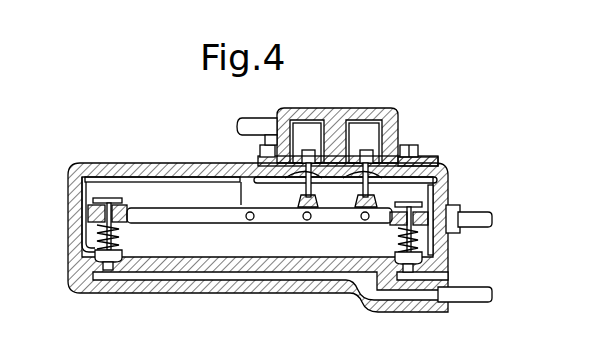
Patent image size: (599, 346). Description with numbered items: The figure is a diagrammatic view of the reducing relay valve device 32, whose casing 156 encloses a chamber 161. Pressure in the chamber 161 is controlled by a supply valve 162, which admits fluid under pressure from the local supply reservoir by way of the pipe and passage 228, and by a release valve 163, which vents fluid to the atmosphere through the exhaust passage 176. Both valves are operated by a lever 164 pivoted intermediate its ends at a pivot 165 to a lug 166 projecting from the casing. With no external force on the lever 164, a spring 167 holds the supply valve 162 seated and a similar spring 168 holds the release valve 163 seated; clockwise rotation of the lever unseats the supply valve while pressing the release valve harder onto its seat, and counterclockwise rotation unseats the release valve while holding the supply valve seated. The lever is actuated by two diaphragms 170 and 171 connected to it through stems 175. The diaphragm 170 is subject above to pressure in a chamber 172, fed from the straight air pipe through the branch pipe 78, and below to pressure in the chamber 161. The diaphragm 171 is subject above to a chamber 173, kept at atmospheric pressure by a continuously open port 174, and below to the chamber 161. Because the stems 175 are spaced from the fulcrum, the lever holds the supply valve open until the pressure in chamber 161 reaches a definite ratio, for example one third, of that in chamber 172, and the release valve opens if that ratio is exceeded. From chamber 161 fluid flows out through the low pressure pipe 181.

The housing 156 is at (224, 241).
The reducing relay valve device 32 is at (333, 108).
The branch pipe 78 is at (245, 127).
The chamber 172 is at (307, 133).
The chamber 173 is at (358, 133).
The port 174 is at (402, 147).
The diaphragm 171 is at (415, 145).
The chamber 161 is at (143, 187).
The lug 166 is at (247, 187).
The lever 164 is at (200, 212).
The pivot 165 is at (251, 220).
The spring 167 is at (115, 240).
The supply valve 162 is at (100, 252).
The spring 168 is at (393, 235).
The diaphragm 170 is at (293, 167).
The stems 175 is at (365, 172).
The low pressure pipe 181 is at (458, 222).
The release valve 163 is at (434, 253).
The exhaust passage 176 is at (447, 275).
The pipe and passage 228 is at (423, 293).